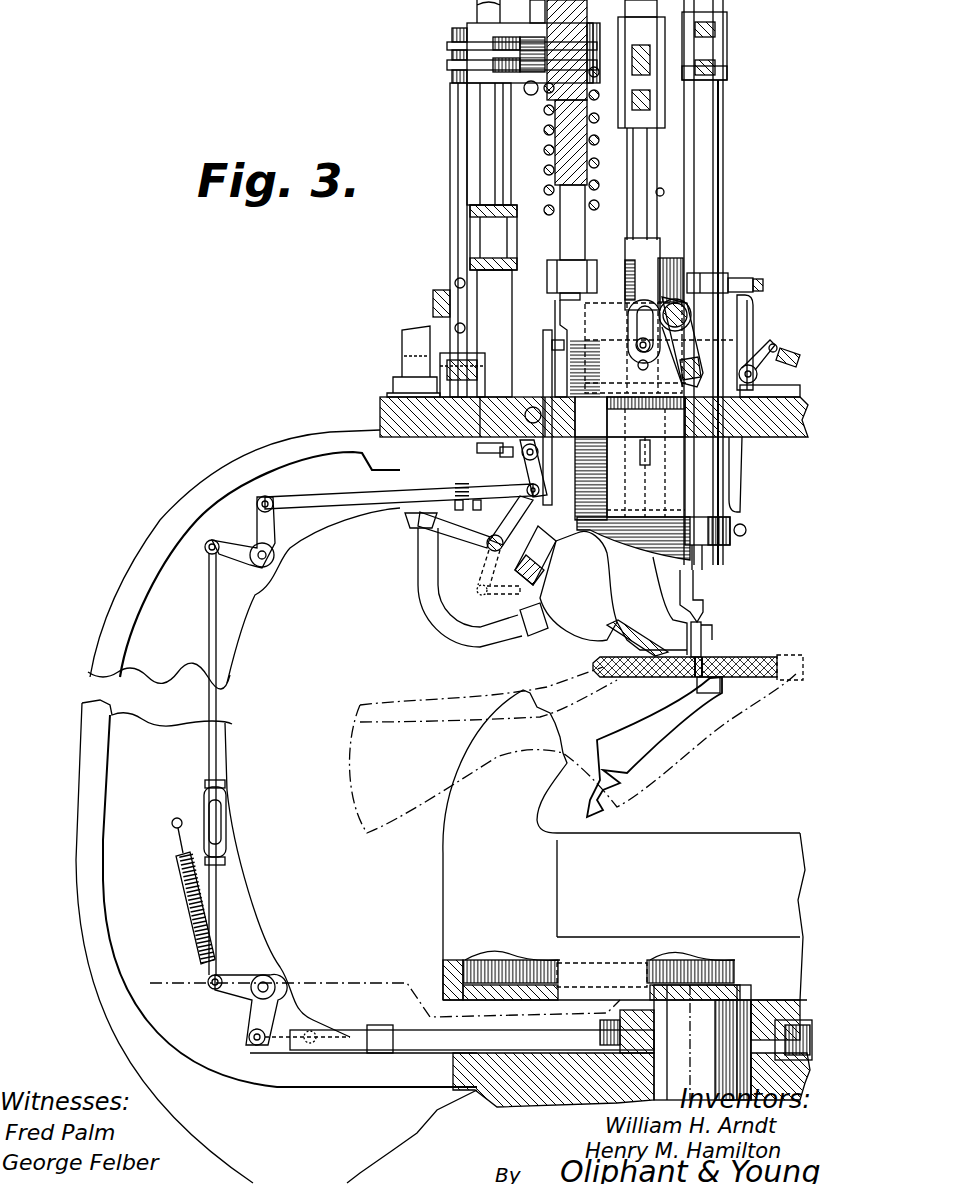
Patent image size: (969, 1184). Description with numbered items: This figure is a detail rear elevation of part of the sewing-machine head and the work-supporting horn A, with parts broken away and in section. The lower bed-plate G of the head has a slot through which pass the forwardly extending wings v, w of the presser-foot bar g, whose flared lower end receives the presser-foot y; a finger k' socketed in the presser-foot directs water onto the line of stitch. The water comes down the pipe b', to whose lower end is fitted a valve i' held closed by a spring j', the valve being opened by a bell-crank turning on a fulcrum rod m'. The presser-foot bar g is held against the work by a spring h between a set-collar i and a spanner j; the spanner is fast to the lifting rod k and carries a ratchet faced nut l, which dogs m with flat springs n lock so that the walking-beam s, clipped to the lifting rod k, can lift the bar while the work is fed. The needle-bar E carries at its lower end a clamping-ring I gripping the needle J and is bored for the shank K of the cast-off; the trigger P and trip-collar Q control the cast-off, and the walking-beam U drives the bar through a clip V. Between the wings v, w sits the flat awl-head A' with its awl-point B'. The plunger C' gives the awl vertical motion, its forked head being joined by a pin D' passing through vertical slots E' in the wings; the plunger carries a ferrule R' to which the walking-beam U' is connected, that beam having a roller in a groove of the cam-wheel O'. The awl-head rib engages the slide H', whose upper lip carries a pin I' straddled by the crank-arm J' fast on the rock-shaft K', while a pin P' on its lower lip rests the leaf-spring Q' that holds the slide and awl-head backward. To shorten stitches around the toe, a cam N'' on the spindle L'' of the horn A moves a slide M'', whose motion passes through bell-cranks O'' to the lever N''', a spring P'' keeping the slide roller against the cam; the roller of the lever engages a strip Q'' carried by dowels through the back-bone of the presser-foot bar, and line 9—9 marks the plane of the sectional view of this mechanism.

The lower bed-plate G is at (770, 440).
The wing v is at (591, 417).
The slide H' is at (646, 417).
The pipe b' is at (405, 355).
The lifting rod k is at (466, 240).
The flat springs n is at (450, 36).
The walking-beam s is at (475, 228).
The dogs m is at (532, 41).
The ratchet faced nut l is at (528, 46).
The spanner j is at (528, 56).
The presser-foot bar g is at (588, 112).
The spring h is at (548, 128).
The set-collar i is at (572, 328).
The strip Q'' is at (541, 417).
The pin D' is at (654, 348).
The rock-shaft K' is at (630, 330).
The vertical slots E' is at (625, 353).
The inner wing w is at (640, 548).
The pin I' is at (675, 342).
The walking-beam U' is at (687, 72).
The ferrule R' is at (651, 120).
The plunger C' is at (669, 196).
The awl-head A' is at (652, 436).
The needle-bar E is at (720, 282).
The clip V is at (728, 20).
The walking-beam U is at (723, 75).
The trip-collar Q is at (725, 268).
The trigger P is at (752, 403).
The crank-arm J' is at (769, 364).
The pin P' is at (631, 457).
The leaf-spring Q' is at (646, 477).
The clamping-ring I is at (721, 536).
The shank of cast-off K is at (720, 558).
The needle J is at (707, 596).
The awl-point B' is at (698, 657).
The presser-foot y is at (566, 583).
The finger k' is at (637, 632).
The lever N''' is at (512, 468).
The spring j' is at (468, 507).
The cam-wheel O' is at (377, 764).
The bell-cranks O'' is at (263, 534).
The fulcrum rod m' is at (469, 553).
The valve i' is at (456, 580).
The work-supporting horn A is at (578, 833).
The spindle L'' is at (700, 1042).
The cam N'' is at (729, 1006).
The slide M'' is at (472, 1025).
The section line 9 is at (174, 985).
The spring P'' is at (176, 891).